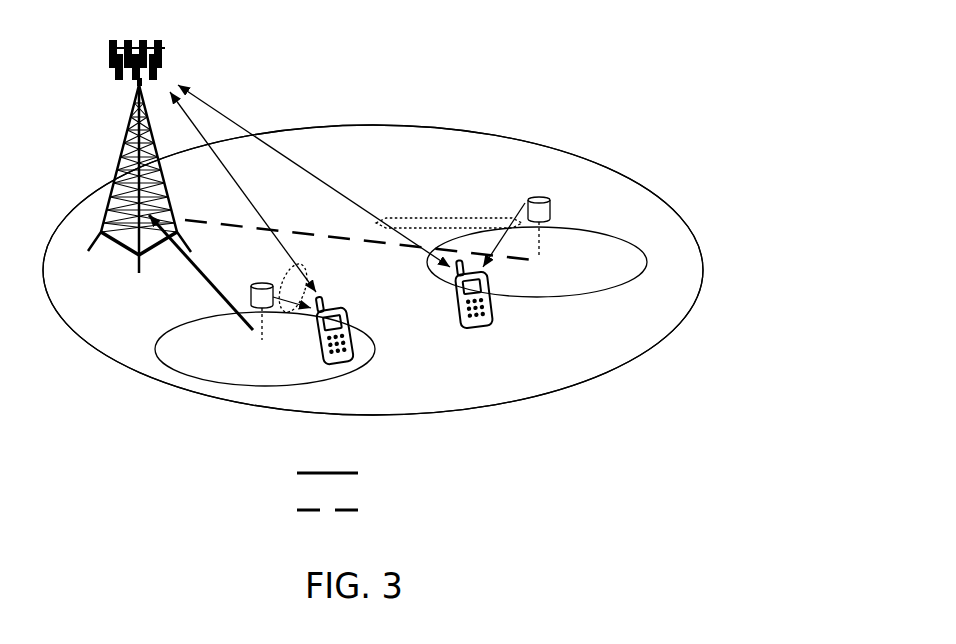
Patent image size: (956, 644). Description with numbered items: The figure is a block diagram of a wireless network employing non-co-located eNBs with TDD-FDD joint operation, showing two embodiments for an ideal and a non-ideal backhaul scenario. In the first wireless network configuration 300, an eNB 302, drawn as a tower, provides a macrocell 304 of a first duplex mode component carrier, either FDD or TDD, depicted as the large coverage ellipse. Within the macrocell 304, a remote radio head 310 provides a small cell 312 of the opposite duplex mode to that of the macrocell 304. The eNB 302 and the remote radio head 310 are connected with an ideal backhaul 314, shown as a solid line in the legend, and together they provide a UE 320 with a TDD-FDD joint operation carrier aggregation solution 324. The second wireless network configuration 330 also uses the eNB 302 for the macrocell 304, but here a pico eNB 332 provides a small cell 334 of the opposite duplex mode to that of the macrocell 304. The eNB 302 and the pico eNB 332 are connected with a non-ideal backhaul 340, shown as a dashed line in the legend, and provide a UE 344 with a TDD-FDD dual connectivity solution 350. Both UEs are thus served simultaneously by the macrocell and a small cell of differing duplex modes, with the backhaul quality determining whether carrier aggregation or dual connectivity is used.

The first wireless network configuration 300 is at (193, 410).
The eNB 302 is at (128, 132).
The macrocell 304 is at (423, 406).
The remote radio head (RRH) 310 is at (262, 282).
The small cell 312 is at (273, 378).
The ideal backhaul 314 is at (331, 349).
The UE 320 is at (352, 322).
The TDD-FDD joint operation CA solution 324 is at (299, 263).
The second wireless network configuration 330 is at (574, 147).
The pico eNB 332 is at (543, 197).
The small cell 334 is at (573, 294).
The non-ideal backhaul 340 is at (367, 370).
The UE 344 is at (493, 318).
The TDD-FDD dual connectivity solution 350 is at (458, 217).